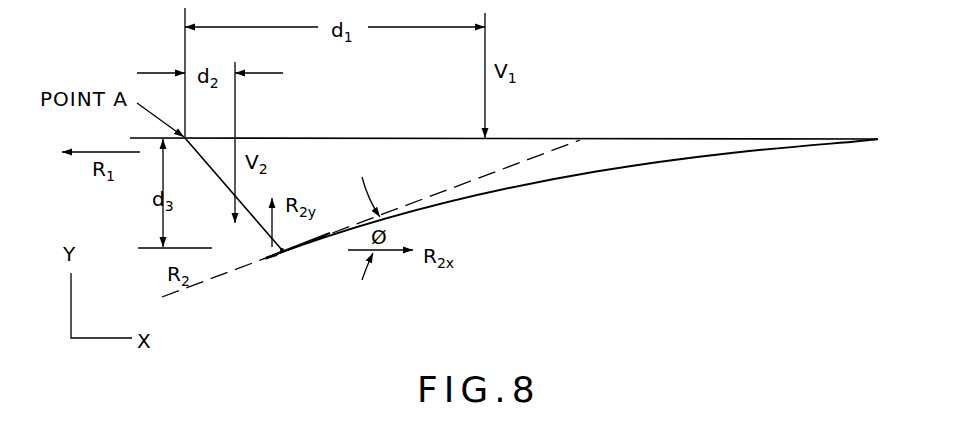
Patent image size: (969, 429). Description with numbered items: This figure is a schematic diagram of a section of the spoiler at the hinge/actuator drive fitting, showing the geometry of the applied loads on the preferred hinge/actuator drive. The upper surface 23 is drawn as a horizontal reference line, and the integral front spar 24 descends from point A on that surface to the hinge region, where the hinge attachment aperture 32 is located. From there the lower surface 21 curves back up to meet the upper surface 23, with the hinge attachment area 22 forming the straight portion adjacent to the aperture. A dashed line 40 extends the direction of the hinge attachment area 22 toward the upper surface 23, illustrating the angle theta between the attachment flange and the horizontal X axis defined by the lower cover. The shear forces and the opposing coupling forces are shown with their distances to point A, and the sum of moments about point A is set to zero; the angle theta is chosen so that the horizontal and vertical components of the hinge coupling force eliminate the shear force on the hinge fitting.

The lower surface 21 is at (532, 182).
The hinge attachment area 22 is at (325, 242).
The upper surface 23 is at (413, 138).
The integral front spar 24 is at (230, 187).
The hinge attachment aperture 32 is at (282, 257).
The tangent extension line 40 is at (583, 138).